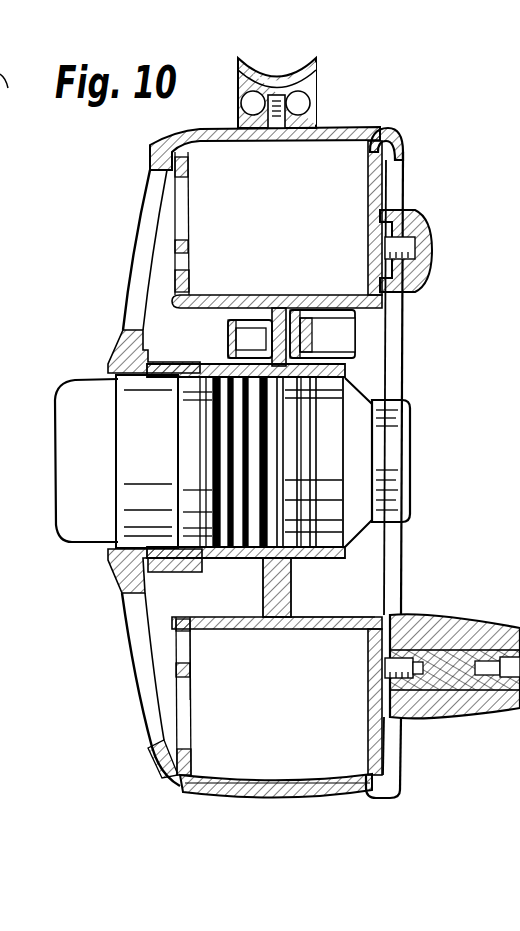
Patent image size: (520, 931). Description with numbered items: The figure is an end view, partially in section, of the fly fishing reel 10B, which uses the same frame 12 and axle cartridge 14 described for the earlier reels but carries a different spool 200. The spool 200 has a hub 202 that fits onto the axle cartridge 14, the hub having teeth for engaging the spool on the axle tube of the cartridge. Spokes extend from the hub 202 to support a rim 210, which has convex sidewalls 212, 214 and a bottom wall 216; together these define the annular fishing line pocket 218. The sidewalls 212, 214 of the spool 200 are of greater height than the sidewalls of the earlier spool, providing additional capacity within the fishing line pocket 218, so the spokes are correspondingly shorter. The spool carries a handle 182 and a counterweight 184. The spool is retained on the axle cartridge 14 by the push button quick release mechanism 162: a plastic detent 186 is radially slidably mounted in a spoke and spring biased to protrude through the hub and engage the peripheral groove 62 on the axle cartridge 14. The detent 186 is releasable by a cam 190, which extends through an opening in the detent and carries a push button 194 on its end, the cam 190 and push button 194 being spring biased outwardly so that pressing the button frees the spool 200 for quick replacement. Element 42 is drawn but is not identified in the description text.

The fly fishing reel 10B is at (402, 118).
The spool 200 is at (412, 166).
The frame 12 is at (135, 191).
The counterweight 184 is at (424, 216).
The quick release mechanism 162 is at (226, 324).
The cam 190 is at (300, 320).
The push button 194 is at (340, 336).
The end cap 42 is at (80, 388).
The plastic detent 186 is at (340, 393).
The axle cartridge 14 is at (415, 428).
The peripheral groove 62 is at (275, 462).
The hub 202 is at (312, 575).
The bottom wall 216 is at (345, 616).
The sidewall 212 is at (197, 670).
The sidewall 214 is at (362, 636).
The annular fishing line pocket 218 is at (294, 731).
The rim 210 is at (200, 762).
The handle 182 is at (450, 712).